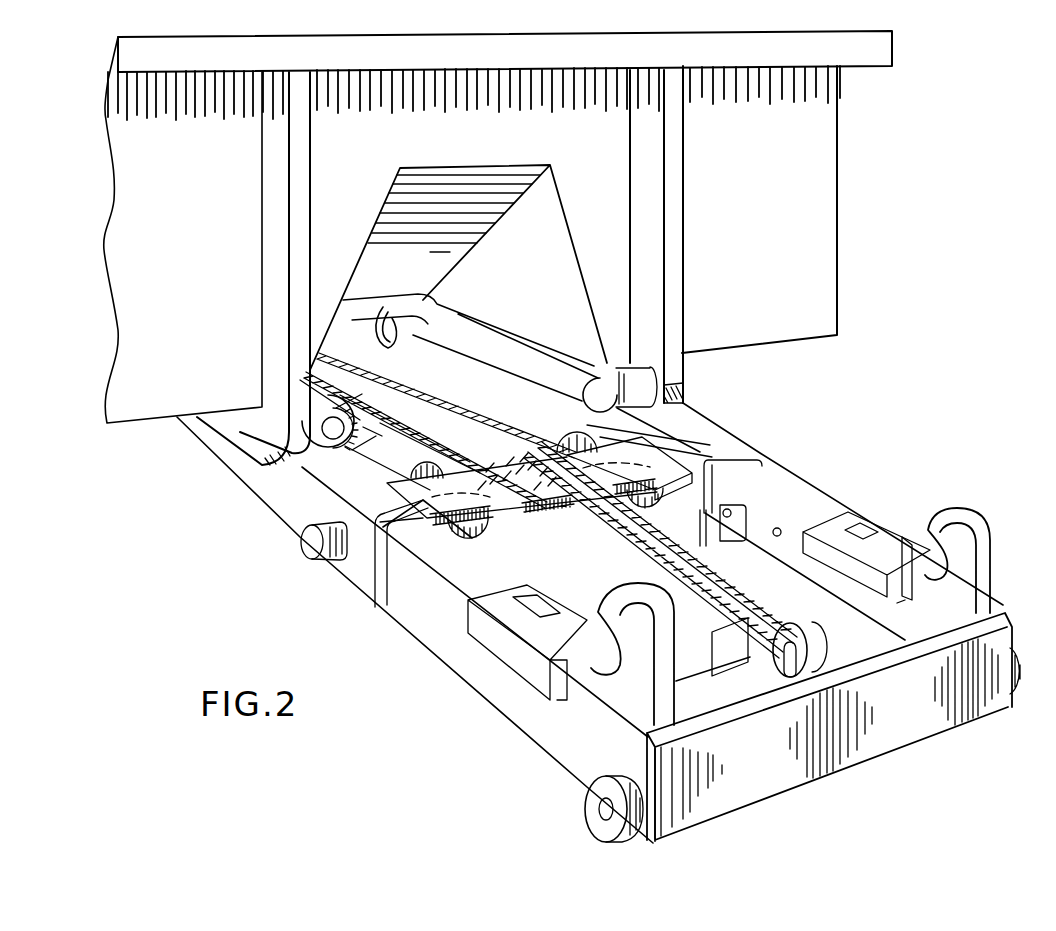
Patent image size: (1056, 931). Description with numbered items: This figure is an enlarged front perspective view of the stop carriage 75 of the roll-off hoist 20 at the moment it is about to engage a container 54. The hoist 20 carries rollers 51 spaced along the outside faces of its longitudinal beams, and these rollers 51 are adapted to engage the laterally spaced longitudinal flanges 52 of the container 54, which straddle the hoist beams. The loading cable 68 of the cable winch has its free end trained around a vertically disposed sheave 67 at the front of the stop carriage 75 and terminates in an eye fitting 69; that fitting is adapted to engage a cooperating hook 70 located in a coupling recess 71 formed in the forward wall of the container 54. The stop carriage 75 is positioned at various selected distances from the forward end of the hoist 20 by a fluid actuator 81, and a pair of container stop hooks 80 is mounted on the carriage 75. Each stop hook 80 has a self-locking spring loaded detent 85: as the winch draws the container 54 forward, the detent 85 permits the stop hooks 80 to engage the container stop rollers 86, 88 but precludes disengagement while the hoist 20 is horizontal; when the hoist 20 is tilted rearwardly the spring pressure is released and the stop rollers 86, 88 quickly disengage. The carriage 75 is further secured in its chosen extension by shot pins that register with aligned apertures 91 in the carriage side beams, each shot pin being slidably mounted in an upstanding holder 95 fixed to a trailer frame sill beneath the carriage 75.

The roll-off hoist 20 is at (262, 512).
The rollers 51 is at (300, 548).
The longitudinal flanges 52 is at (684, 378).
The container 54 is at (843, 208).
The sheave 67 is at (775, 662).
The loading cable 68 is at (725, 574).
The eye fitting 69 is at (448, 327).
The hook 70 is at (386, 310).
The coupling recess 71 is at (530, 255).
The stop carriage 75 is at (536, 742).
The container stop hooks 80 is at (628, 600).
The fluid actuator 81 is at (568, 527).
The spring loaded detent 85 is at (900, 536).
The container stop roller 86 is at (684, 393).
The container stop roller 88 is at (262, 493).
The apertures 91 is at (779, 531).
The holder 95 is at (748, 510).